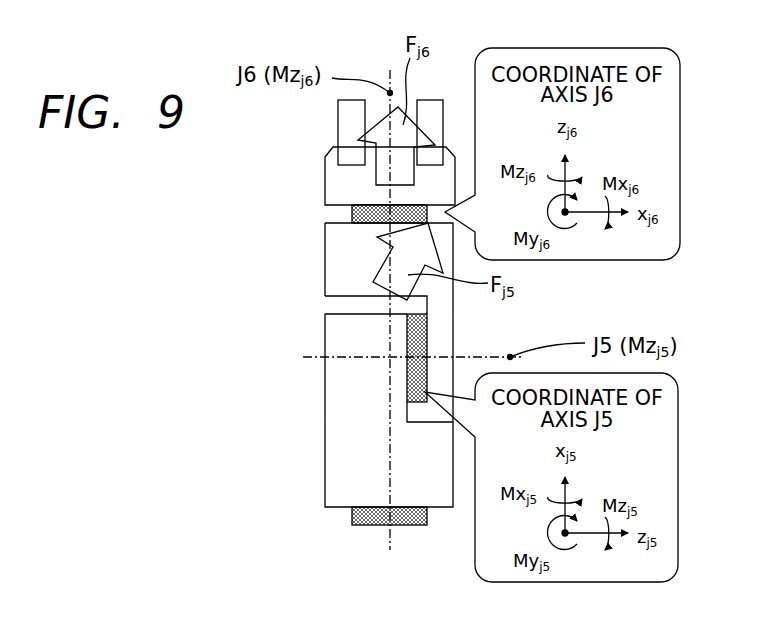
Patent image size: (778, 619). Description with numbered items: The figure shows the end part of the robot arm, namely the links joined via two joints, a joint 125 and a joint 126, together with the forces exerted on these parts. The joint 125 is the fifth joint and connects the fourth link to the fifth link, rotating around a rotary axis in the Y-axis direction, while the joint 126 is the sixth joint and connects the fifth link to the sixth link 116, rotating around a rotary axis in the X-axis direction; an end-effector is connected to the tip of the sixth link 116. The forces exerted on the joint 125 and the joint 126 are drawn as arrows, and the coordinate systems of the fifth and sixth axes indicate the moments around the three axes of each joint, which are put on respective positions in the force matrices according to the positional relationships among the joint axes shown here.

The sixth link 116 is at (338, 178).
The joint 125 is at (423, 327).
The joint 126 is at (352, 212).